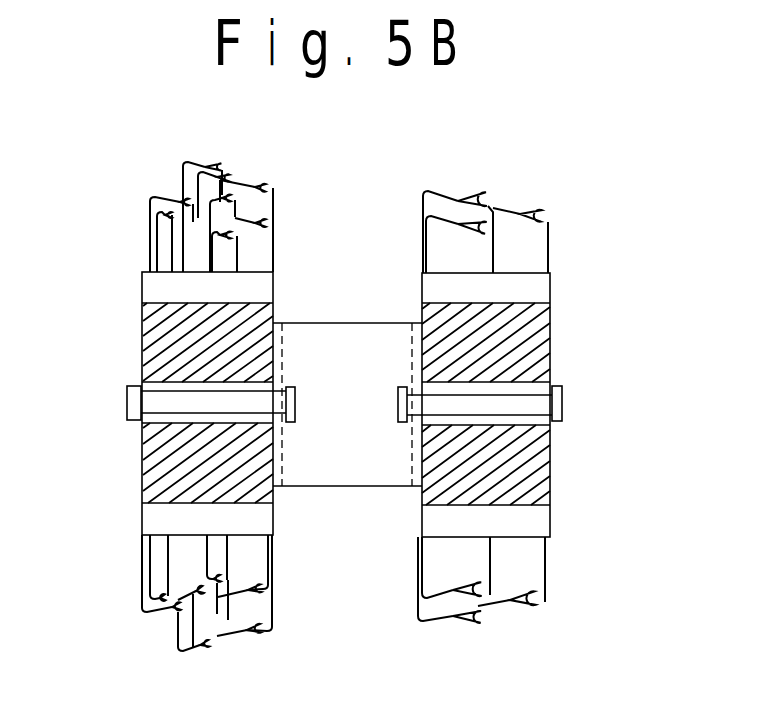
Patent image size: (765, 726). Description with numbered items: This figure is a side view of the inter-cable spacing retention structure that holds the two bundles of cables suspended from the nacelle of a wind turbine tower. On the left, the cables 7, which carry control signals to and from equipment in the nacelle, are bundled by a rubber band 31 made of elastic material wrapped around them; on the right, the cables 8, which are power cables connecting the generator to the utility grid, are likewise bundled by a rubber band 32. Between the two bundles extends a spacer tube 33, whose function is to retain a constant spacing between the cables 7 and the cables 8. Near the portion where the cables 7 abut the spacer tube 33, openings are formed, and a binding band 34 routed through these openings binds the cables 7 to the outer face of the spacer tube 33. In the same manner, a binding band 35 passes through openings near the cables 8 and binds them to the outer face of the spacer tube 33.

The cables 7 is at (180, 257).
The cables 8 is at (533, 247).
The rubber band 31 is at (157, 342).
The rubber band 32 is at (535, 343).
The spacer tube 33 is at (352, 328).
The binding band 34 is at (134, 403).
The binding band 35 is at (557, 402).